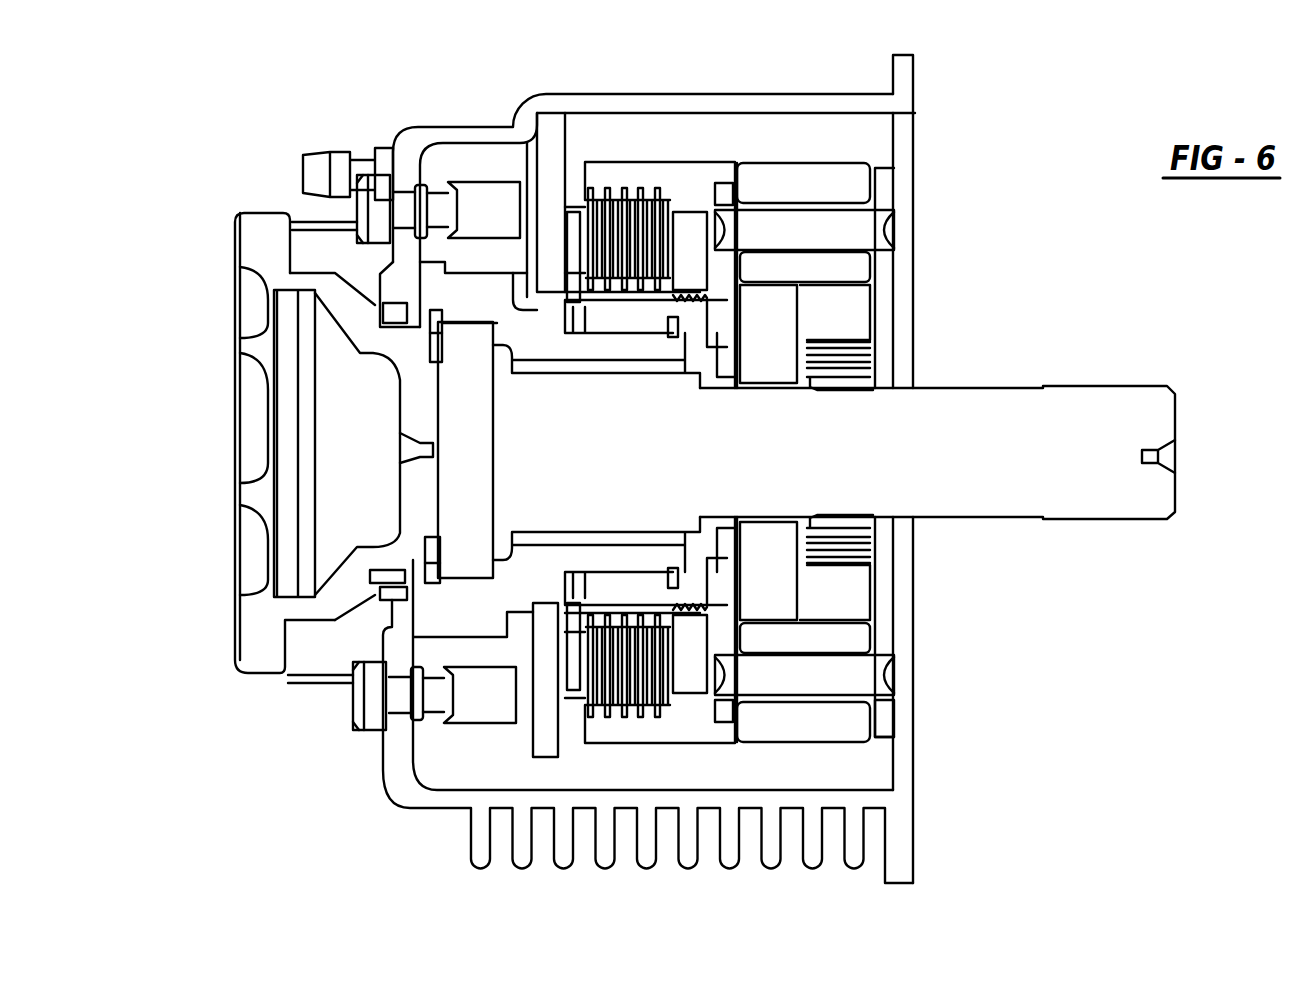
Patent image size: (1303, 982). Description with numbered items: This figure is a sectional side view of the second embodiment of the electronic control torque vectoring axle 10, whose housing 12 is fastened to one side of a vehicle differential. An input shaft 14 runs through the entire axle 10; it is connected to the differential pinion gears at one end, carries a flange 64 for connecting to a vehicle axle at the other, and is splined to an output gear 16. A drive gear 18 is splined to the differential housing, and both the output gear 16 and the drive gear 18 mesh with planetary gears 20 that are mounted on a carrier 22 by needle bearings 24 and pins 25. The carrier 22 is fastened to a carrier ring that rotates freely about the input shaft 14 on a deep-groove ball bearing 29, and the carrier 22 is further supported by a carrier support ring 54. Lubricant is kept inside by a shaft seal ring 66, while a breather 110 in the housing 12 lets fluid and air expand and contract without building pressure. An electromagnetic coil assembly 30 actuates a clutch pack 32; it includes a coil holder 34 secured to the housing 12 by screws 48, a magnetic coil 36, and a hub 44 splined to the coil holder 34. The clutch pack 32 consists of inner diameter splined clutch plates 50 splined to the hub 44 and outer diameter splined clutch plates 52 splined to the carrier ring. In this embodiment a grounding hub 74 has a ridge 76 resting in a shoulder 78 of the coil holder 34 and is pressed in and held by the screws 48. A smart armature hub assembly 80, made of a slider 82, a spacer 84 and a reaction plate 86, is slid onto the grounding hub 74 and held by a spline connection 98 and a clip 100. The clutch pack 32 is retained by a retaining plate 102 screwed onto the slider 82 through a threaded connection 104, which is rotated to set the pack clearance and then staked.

The electronic control torque vectoring axle 10 is at (1031, 185).
The housing 12 is at (918, 83).
The input shaft 14 is at (980, 410).
The output gear 16 is at (762, 583).
The drive gear 18 is at (822, 585).
The planetary gears 20 is at (822, 162).
The carrier 22 is at (723, 173).
The needle bearings 24 is at (830, 707).
The pins 25 is at (850, 682).
The deep-groove ball bearing 29 is at (505, 478).
The electromagnetic coil assembly 30 is at (503, 105).
The clutch pack 32 is at (608, 143).
The coil holder 34 is at (437, 738).
The magnetic coil 36 is at (482, 200).
The hub 44 is at (598, 590).
The screws 48 is at (367, 205).
The inner diameter splined clutch plates 50 is at (585, 290).
The outer diameter splined clutch plates 52 is at (657, 187).
The carrier support ring 54 is at (877, 718).
The flange 64 is at (252, 637).
The shaft seal ring 66 is at (377, 608).
The grounding hub 74 is at (443, 292).
The ridge 76 is at (437, 625).
The shoulder 78 is at (440, 640).
The smart armature hub assembly 80 is at (634, 558).
The slider 82 is at (633, 303).
The spacer 84 is at (570, 690).
The reaction plate 86 is at (547, 740).
The spline connection 98 is at (648, 563).
The clip 100 is at (427, 327).
The retaining plate 102 is at (685, 663).
The threaded connection 104 is at (707, 323).
The breather 110 is at (345, 165).